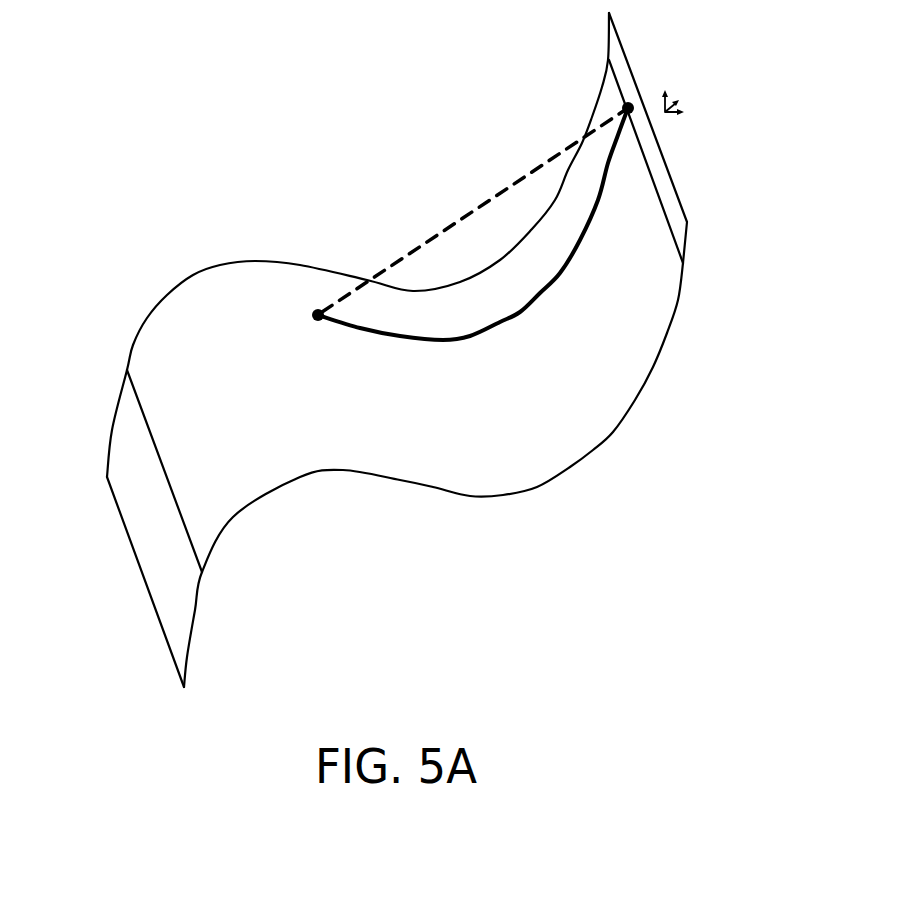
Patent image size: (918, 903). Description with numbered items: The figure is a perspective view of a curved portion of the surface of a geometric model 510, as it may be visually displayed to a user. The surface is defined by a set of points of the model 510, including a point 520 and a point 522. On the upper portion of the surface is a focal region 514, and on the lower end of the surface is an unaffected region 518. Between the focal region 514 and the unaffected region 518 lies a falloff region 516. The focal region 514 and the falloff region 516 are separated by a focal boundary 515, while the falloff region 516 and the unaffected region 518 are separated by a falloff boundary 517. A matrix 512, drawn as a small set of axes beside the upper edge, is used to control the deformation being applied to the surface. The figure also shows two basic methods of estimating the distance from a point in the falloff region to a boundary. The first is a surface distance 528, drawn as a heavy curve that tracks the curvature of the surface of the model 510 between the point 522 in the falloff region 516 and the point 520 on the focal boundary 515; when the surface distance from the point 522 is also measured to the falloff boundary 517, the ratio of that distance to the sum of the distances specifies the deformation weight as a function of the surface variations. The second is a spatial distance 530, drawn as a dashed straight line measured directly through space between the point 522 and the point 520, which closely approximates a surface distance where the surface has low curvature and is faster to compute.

The geometric model 510 is at (255, 262).
The matrix 512 is at (684, 105).
The focal region 514 is at (678, 230).
The focal boundary 515 is at (667, 222).
The falloff region 516 is at (497, 485).
The falloff boundary 517 is at (157, 447).
The unaffected region 518 is at (157, 558).
The point 520 is at (628, 114).
The point 522 is at (318, 322).
The surface distance 528 is at (448, 343).
The spatial distance 530 is at (463, 220).